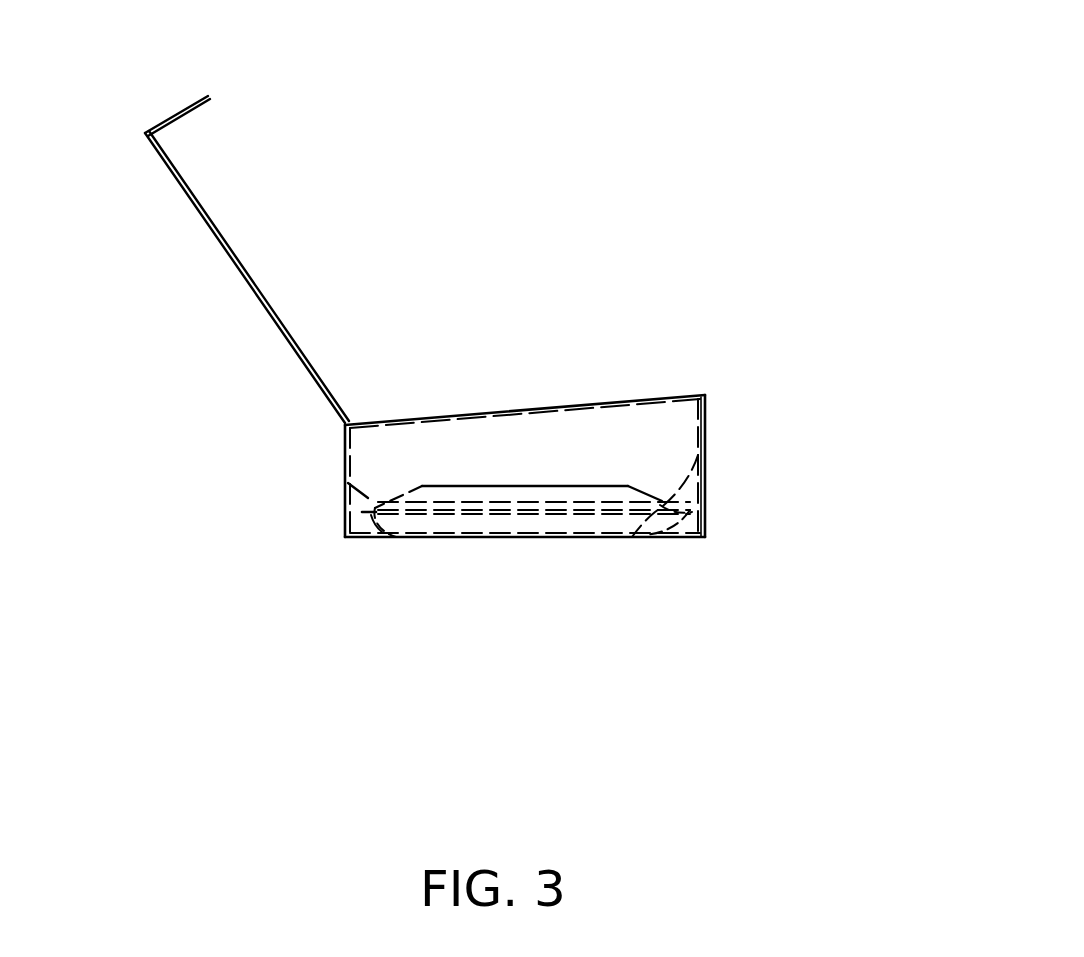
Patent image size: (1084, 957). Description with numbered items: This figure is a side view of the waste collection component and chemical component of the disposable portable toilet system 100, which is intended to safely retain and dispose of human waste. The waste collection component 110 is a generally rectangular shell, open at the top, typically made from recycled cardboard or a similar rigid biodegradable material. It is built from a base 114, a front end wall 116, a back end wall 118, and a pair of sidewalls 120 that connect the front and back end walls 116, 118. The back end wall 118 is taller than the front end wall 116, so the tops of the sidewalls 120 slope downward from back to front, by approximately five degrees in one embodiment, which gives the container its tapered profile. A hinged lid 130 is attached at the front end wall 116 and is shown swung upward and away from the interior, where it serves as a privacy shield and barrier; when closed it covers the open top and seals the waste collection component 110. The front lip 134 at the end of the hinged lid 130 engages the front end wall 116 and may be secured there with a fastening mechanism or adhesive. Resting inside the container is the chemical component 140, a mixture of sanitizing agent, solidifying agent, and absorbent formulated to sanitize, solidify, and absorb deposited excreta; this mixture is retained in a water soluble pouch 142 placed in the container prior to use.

The disposable portable toilet system 100 is at (712, 263).
The waste collection component 110 is at (716, 385).
The base 114 is at (595, 540).
The front end wall 116 is at (345, 497).
The back end wall 118 is at (708, 453).
The pair of sidewalls 120 is at (546, 464).
The hinged lid 130 is at (217, 249).
The front lip 134 is at (175, 112).
The chemical component 140 is at (477, 536).
The water soluble pouch 142 is at (437, 520).